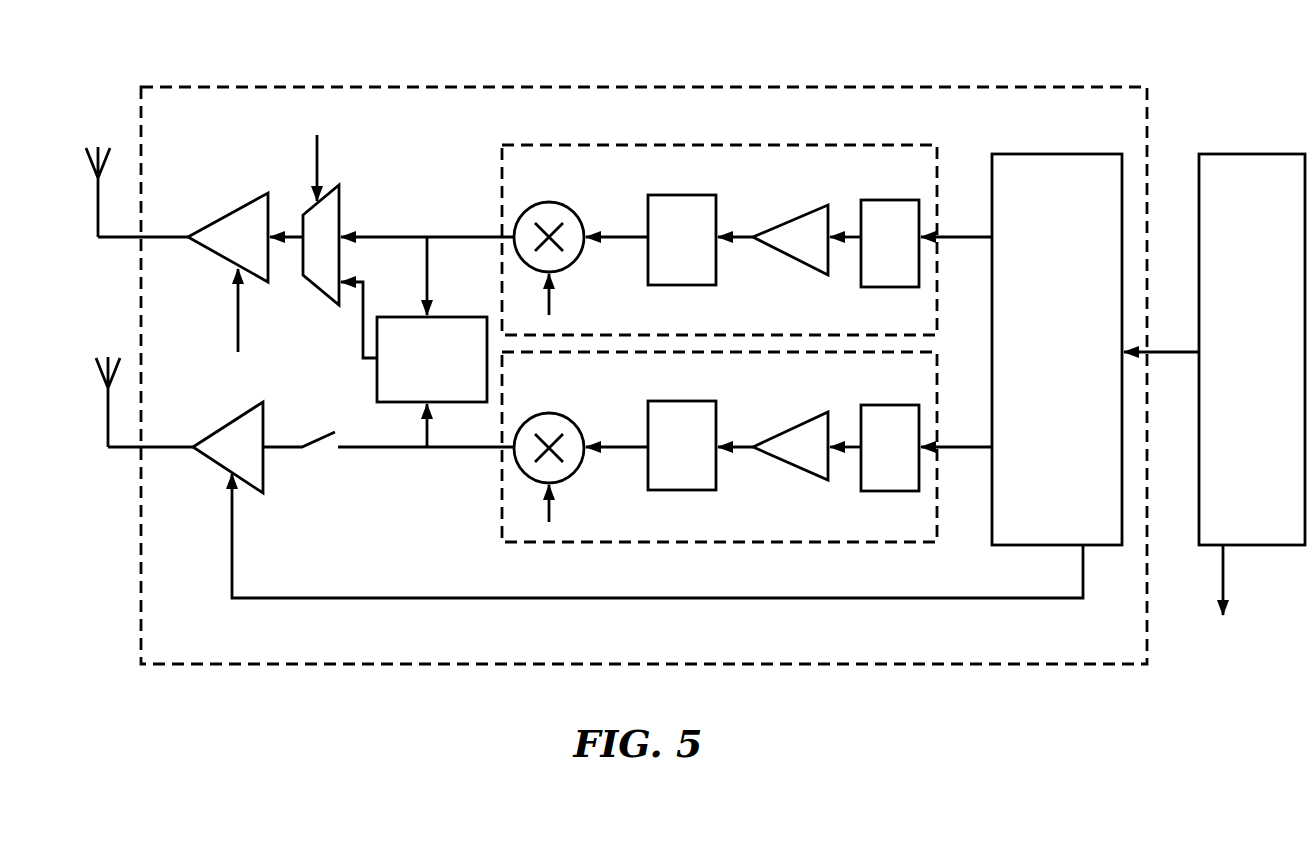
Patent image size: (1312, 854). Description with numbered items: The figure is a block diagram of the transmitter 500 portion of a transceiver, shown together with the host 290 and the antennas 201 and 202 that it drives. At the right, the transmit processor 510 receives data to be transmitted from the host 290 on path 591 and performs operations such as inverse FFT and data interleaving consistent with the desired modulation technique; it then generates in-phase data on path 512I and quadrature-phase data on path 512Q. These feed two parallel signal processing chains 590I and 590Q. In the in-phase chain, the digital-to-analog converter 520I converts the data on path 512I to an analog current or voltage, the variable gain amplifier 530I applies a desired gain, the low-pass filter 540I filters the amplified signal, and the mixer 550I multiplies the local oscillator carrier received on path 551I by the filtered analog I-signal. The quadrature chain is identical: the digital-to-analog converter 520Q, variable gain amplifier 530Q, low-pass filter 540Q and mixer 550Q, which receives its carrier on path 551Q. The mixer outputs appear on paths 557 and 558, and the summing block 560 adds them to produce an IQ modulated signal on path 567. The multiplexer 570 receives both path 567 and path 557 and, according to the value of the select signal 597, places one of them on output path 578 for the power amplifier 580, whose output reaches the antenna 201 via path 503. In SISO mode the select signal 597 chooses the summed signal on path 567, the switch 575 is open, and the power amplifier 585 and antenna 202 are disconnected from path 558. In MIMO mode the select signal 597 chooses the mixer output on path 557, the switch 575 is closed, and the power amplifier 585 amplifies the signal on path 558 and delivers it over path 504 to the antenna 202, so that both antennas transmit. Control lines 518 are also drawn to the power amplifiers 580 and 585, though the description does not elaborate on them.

The transmitter 500 is at (566, 78).
The antenna 201 is at (86, 172).
The antenna 202 is at (96, 380).
The path 503 is at (162, 232).
The path 504 is at (162, 440).
The power amplifier 580 is at (223, 208).
The power amplifier 585 is at (218, 420).
The output path 578 is at (295, 232).
The multiplexer 570 is at (325, 298).
The select signal 597 is at (317, 152).
The bias/control line 518 is at (242, 297).
The path 567 is at (363, 358).
The path 557 is at (448, 235).
The path 558 is at (457, 455).
The switch 575 is at (320, 450).
The summing block 560 is at (432, 359).
The signal processing chain 590I is at (719, 240).
The signal processing chain 590Q is at (719, 447).
The mixer 550I is at (568, 207).
The mixer 550Q is at (568, 420).
The LO signal path 551I is at (553, 300).
The LO signal path 551Q is at (553, 508).
The low-pass filter 540I is at (700, 240).
The low-pass filter 540Q is at (700, 445).
The variable gain amplifier 530I is at (788, 222).
The variable gain amplifier 530Q is at (788, 430).
The digital-to-analog converter 520I is at (878, 198).
The digital-to-analog converter 520Q is at (878, 403).
The path 512I is at (975, 240).
The path 512Q is at (975, 450).
The transmit processor 510 is at (1057, 349).
The host 290 is at (1252, 349).
The path 591 is at (1172, 358).